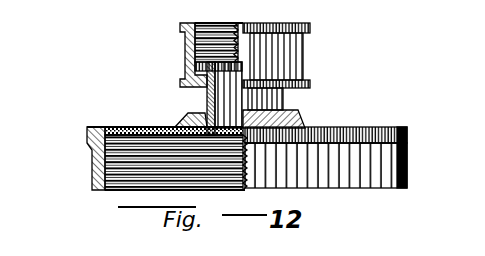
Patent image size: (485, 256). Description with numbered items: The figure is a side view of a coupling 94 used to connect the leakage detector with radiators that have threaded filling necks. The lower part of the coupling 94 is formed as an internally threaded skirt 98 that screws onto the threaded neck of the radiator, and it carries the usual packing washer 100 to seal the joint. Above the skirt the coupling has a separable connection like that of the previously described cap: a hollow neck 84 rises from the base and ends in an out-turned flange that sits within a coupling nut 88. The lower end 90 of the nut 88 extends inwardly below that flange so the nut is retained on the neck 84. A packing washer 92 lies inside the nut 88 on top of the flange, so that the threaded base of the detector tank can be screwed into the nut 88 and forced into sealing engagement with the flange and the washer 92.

The hollow neck 84 is at (207, 100).
The coupling nut 88 is at (310, 34).
The lower end 90 is at (193, 73).
The packing washer 92 is at (208, 62).
The coupling 94 is at (300, 115).
The internally threaded skirt 98 is at (93, 171).
The packing washer 100 is at (146, 128).